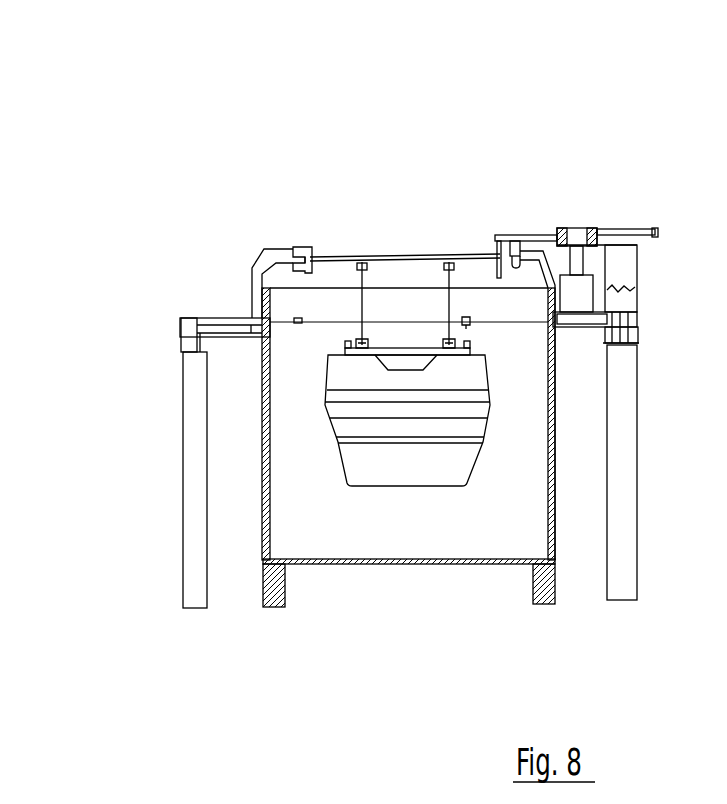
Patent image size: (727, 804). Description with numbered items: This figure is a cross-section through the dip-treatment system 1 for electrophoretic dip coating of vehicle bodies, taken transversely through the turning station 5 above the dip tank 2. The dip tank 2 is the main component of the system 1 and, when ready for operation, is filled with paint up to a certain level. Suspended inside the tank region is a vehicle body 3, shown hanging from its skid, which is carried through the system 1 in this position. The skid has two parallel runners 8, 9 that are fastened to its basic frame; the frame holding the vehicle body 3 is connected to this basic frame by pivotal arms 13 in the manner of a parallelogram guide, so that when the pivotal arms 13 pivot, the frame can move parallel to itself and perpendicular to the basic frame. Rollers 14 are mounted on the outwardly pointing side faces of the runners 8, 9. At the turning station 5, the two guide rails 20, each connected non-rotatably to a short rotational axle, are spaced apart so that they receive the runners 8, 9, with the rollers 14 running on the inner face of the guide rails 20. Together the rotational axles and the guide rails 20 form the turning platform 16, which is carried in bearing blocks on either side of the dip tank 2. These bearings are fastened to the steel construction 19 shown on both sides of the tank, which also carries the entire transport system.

The system for electrophoretic dip coating vehicle bodies 1 is at (130, 140).
The dip tank 2 is at (466, 572).
The vehicle body 3 is at (408, 456).
The turning station 5 is at (468, 245).
The runner 8 is at (518, 266).
The runner 9 is at (311, 247).
The pivotal arm 13 is at (362, 311).
The roller 14 is at (403, 357).
The turning platform 16 is at (382, 256).
The steel construction 19 is at (185, 520).
The guide rail 20 is at (263, 248).